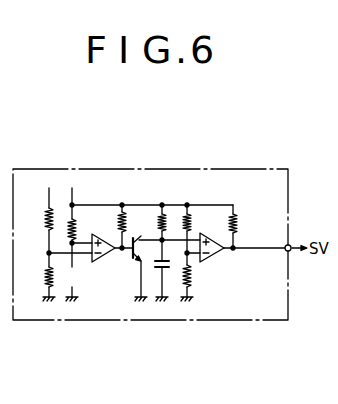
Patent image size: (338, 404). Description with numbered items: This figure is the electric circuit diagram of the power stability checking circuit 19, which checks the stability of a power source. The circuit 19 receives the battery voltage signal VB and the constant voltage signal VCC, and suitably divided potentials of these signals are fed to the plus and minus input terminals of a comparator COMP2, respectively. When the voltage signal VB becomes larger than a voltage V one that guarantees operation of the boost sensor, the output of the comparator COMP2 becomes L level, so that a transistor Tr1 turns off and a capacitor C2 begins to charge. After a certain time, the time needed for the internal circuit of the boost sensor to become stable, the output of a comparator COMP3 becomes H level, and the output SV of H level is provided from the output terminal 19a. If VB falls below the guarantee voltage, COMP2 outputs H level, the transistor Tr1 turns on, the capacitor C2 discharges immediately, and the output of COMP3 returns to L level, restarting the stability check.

The power stability checking circuit 19 is at (253, 169).
The output terminal 19a is at (292, 246).
The comparator COMP2 is at (96, 261).
The comparator COMP3 is at (211, 259).
The transistor Tr1 is at (141, 237).
The capacitor C2 is at (170, 268).